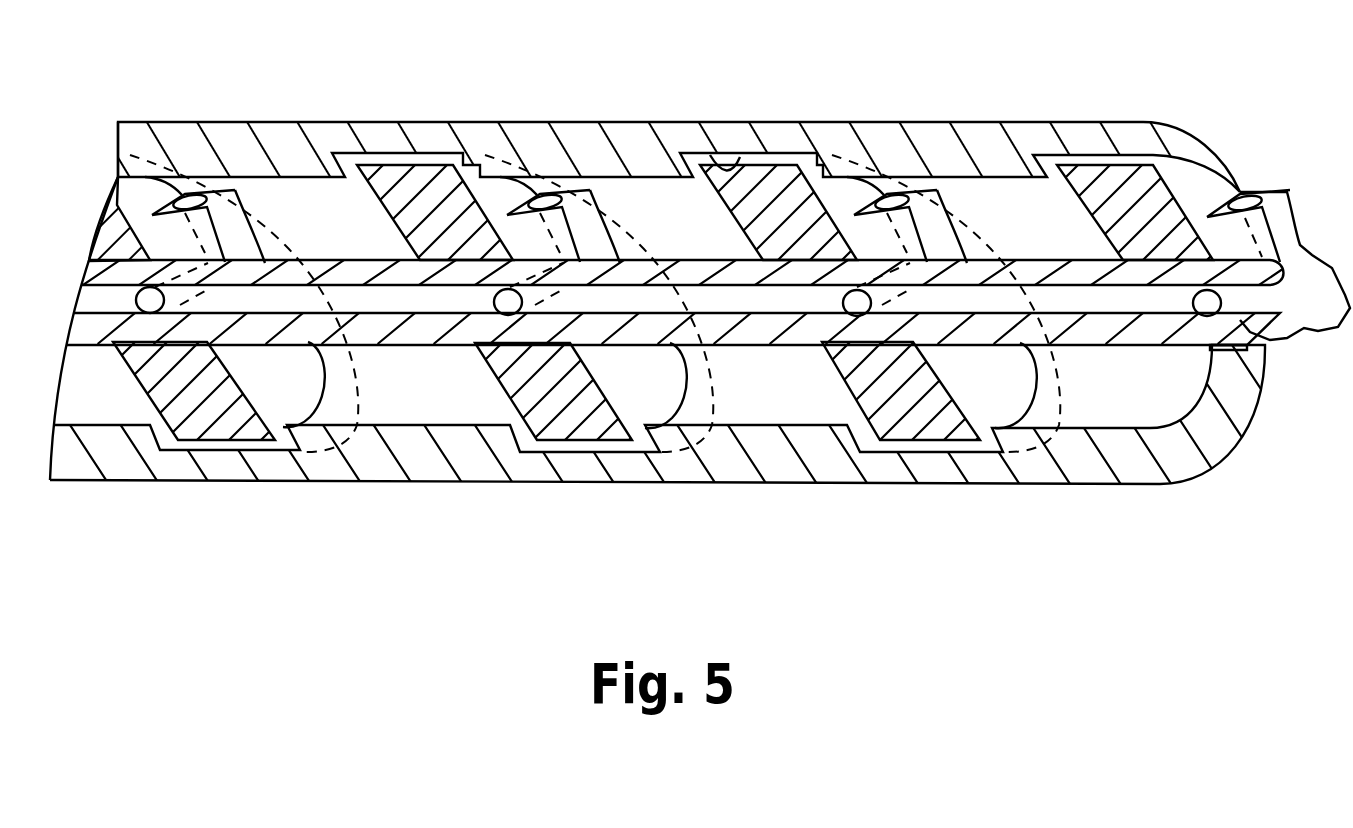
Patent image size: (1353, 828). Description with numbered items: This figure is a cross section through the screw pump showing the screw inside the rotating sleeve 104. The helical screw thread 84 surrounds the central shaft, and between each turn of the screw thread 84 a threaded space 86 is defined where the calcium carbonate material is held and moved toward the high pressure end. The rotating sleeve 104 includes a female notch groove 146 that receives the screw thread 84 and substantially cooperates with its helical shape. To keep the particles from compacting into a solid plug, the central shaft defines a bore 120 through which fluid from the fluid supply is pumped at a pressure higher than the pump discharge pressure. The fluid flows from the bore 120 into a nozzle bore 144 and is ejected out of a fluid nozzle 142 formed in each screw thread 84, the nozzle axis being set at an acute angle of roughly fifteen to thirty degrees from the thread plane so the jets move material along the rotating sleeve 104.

The rotating sleeve 104 is at (207, 140).
The screw thread 84 is at (422, 180).
The female notch groove 146 is at (712, 158).
The fluid nozzle 142 is at (890, 198).
The bore 120 is at (1062, 303).
The nozzle bore 144 is at (853, 308).
The threaded space 86 is at (330, 238).